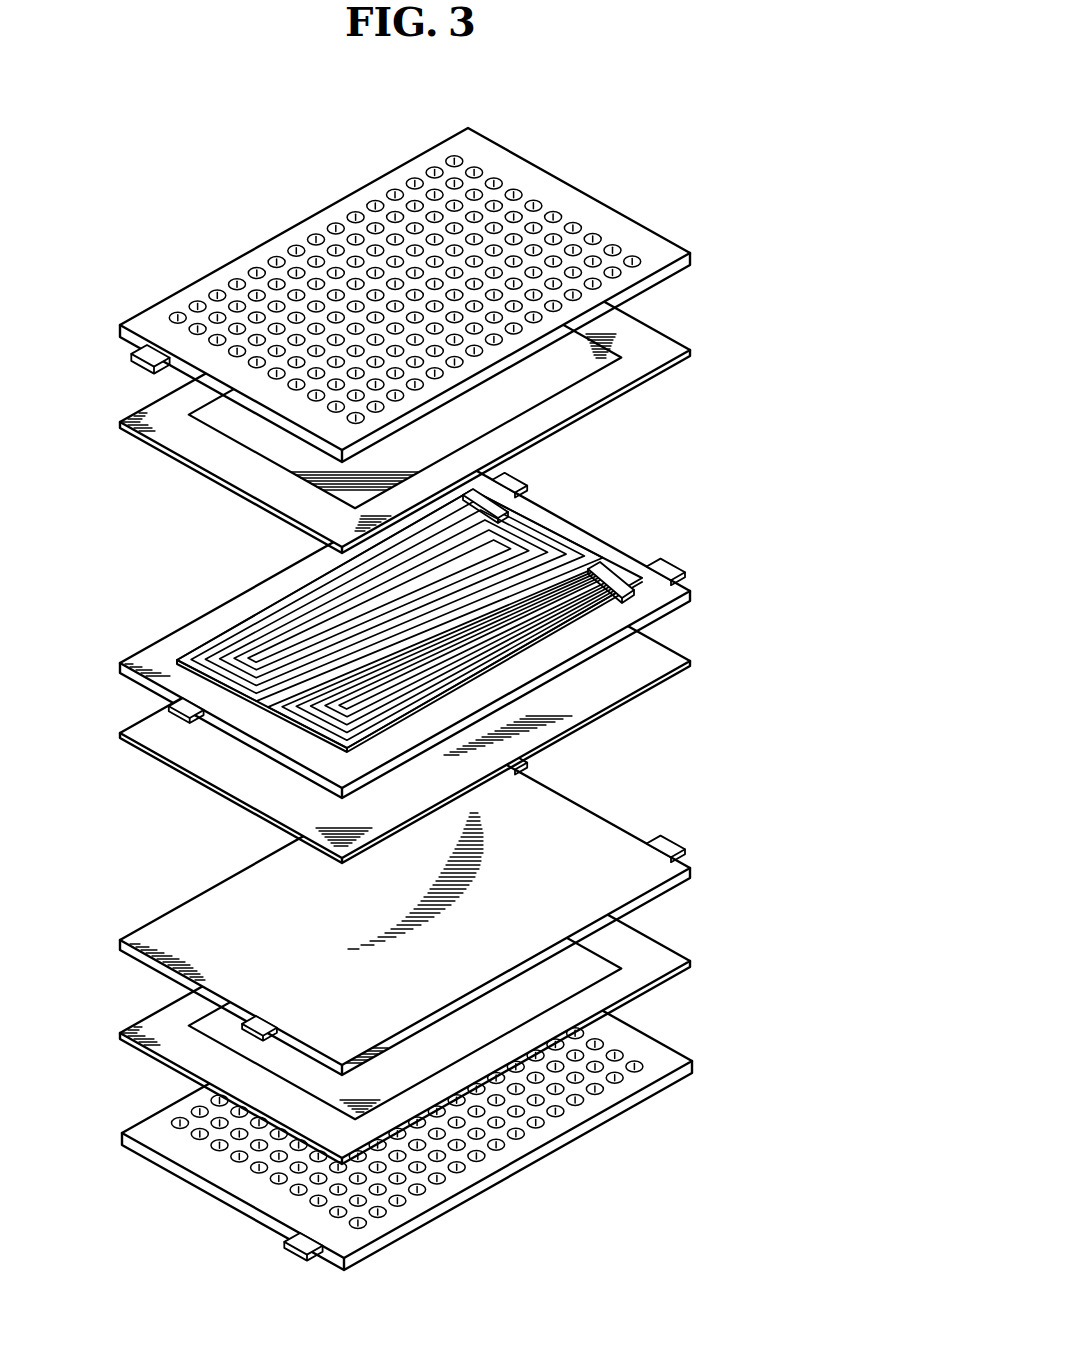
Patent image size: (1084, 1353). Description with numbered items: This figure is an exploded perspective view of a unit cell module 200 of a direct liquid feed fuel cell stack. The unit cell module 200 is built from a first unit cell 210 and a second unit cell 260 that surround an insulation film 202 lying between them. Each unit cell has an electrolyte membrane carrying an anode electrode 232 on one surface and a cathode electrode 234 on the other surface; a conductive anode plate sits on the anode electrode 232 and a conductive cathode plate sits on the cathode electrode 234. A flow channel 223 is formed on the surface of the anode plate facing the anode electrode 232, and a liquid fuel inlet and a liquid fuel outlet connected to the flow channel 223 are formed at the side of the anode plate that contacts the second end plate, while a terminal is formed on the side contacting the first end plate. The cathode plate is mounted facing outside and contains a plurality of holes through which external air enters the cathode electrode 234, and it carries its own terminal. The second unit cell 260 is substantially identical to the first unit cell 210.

The unit cell module 200 is at (633, 175).
The insulation film 202 is at (688, 650).
The first unit cell 210 is at (773, 593).
The flow channel 223 is at (627, 597).
The anode electrode 232 is at (480, 1054).
The cathode electrode 234 is at (472, 436).
The second unit cell 260 is at (773, 847).